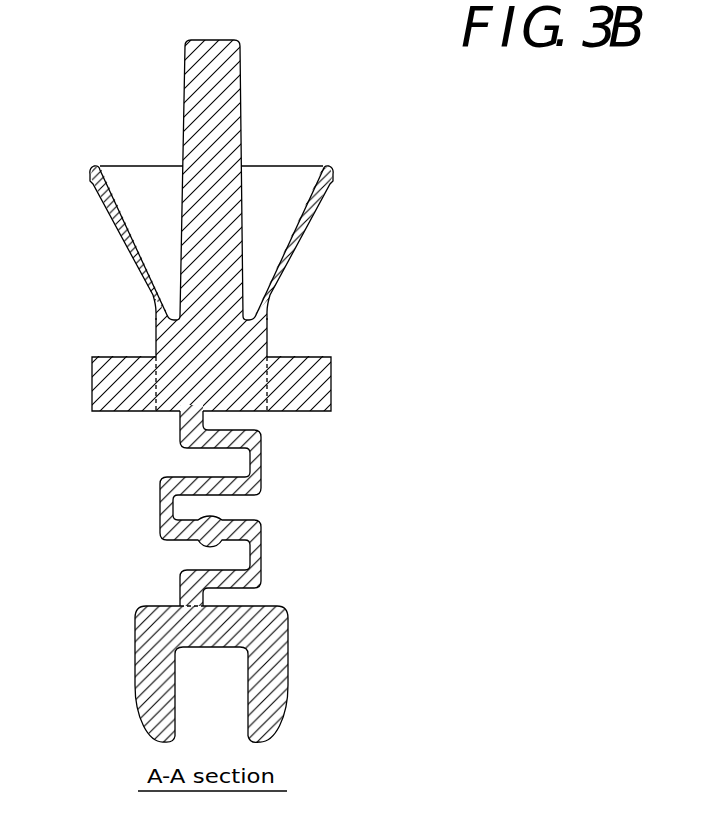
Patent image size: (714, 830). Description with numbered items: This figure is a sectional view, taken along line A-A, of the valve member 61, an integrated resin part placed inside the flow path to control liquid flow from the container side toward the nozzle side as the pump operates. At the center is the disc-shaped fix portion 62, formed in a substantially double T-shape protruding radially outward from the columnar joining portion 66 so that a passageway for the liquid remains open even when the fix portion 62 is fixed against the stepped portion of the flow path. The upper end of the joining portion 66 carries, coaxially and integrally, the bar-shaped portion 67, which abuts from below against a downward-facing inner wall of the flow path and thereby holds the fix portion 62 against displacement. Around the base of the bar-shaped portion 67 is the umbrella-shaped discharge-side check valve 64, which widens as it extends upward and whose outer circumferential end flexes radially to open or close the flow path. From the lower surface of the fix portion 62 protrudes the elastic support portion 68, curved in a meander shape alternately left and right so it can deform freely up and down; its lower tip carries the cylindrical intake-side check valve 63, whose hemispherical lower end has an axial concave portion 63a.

The valve member 61 is at (390, 160).
The fix portion 62 is at (107, 383).
The intake-side check valve 63 is at (291, 647).
The concave portion 63a is at (210, 677).
The discharge-side check valve 64 is at (310, 227).
The joining portion 66 is at (256, 343).
The bar-shaped portion 67 is at (190, 90).
The elastic support portion 68 is at (253, 527).